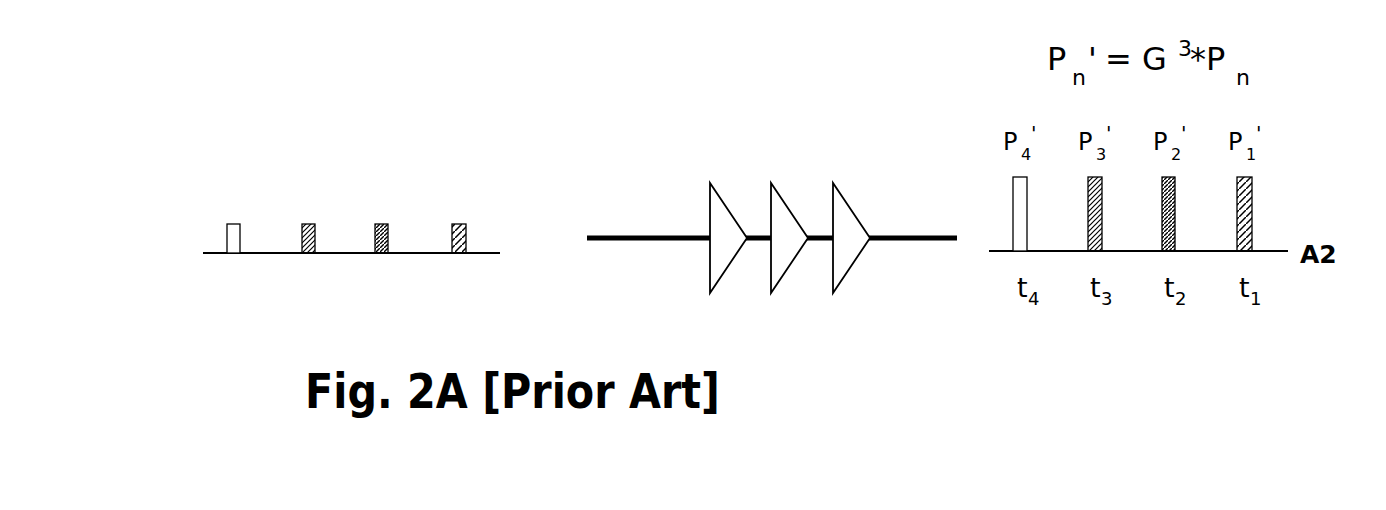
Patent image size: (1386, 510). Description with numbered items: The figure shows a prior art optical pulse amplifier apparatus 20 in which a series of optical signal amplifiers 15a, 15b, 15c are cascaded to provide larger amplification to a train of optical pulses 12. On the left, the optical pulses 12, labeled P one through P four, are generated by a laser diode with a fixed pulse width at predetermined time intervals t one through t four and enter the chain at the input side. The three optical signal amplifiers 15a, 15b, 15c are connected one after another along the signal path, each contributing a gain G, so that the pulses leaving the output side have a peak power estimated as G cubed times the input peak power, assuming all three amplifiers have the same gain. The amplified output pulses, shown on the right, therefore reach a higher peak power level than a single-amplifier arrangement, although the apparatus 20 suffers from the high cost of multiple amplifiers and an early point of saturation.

The optical pulses 12 is at (203, 181).
The prior art apparatus 20 is at (583, 103).
The optical signal amplifier 15a is at (709, 203).
The optical signal amplifier 15b is at (787, 273).
The optical signal amplifier 15c is at (832, 203).